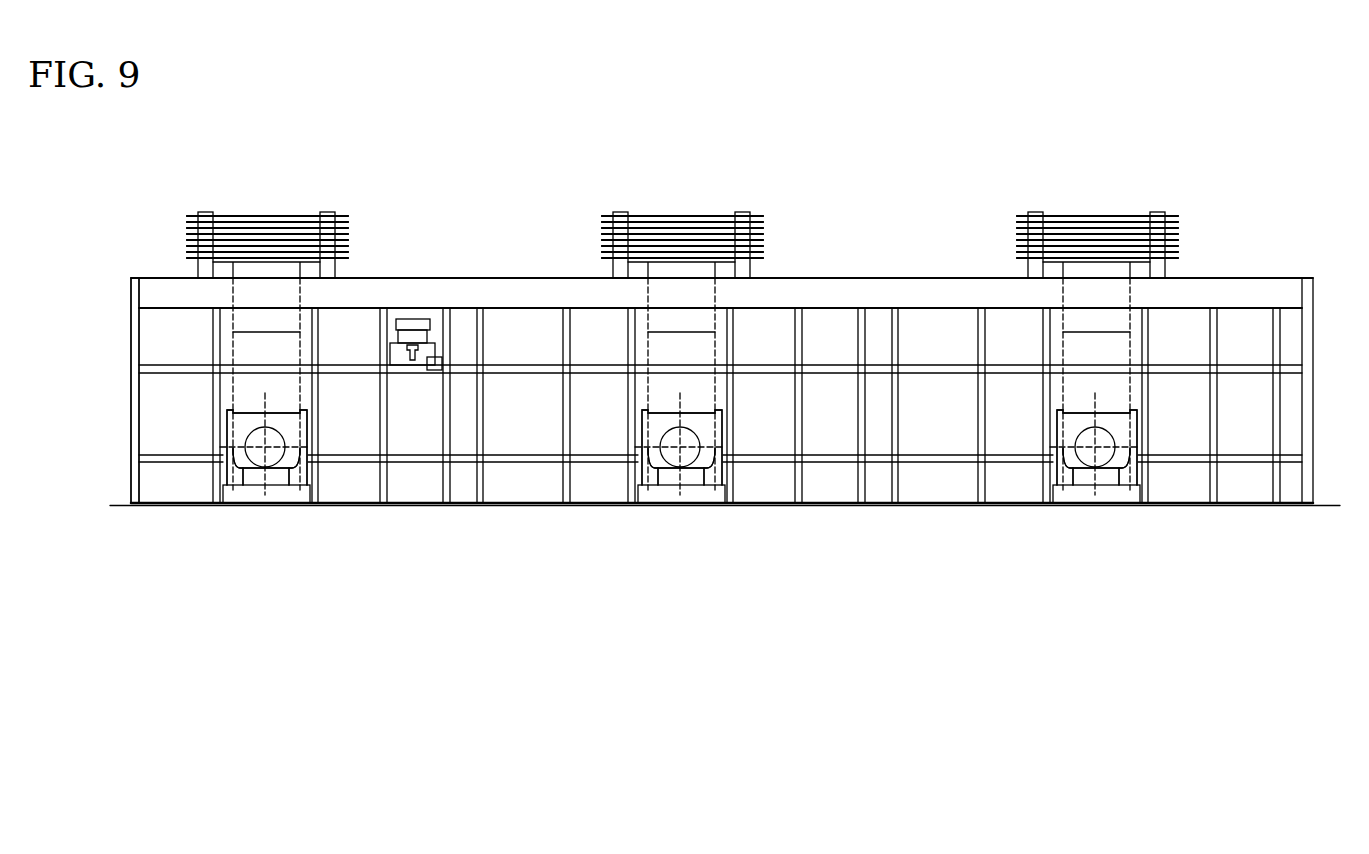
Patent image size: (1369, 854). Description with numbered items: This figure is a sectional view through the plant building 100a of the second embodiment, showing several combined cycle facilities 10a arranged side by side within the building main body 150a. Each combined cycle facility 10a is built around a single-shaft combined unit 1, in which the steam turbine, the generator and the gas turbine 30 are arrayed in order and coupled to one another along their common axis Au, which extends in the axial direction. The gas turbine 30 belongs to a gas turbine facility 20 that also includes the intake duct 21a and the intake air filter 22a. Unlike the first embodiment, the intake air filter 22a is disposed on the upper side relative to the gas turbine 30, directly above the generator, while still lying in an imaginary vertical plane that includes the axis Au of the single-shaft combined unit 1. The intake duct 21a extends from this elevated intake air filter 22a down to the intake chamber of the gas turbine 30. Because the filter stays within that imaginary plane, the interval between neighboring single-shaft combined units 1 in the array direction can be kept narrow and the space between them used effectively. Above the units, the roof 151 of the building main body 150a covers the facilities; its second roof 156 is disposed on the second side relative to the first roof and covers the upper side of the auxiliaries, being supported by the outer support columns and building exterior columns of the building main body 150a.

The plant building 100a is at (1302, 274).
The building main body 150a is at (134, 277).
The roof 151 is at (722, 246).
The second roof 156 is at (722, 246).
The combined cycle facility 10a is at (699, 194).
The intake air filter 22a is at (682, 205).
The intake duct 21a is at (631, 344).
The gas turbine facility 20 is at (637, 493).
The gas turbine 30 is at (637, 493).
The axis Au is at (680, 478).
The single-shaft combined unit 1 is at (696, 531).